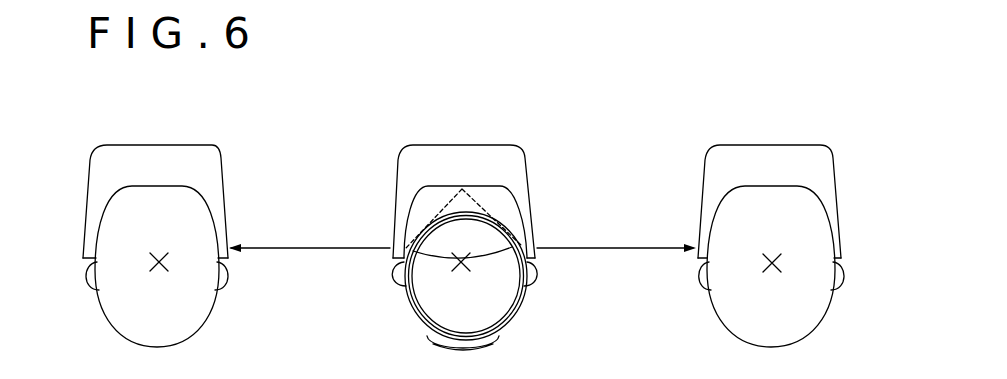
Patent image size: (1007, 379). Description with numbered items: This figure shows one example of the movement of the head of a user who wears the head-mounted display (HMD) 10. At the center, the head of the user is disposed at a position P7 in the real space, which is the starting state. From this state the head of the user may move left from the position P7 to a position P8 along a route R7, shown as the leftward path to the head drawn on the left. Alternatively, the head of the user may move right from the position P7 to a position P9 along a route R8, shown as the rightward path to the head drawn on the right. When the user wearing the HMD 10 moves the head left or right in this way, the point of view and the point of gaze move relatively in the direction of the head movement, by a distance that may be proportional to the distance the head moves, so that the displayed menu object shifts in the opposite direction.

The head-mounted display 10 is at (207, 146).
The position P7 is at (461, 274).
The position P8 is at (158, 275).
The position P9 is at (772, 276).
The route R7 is at (297, 251).
The route R8 is at (612, 251).